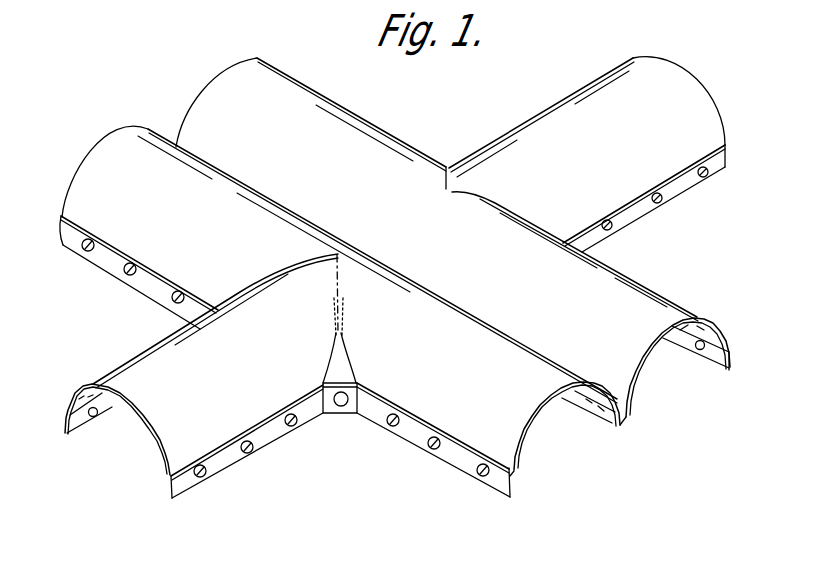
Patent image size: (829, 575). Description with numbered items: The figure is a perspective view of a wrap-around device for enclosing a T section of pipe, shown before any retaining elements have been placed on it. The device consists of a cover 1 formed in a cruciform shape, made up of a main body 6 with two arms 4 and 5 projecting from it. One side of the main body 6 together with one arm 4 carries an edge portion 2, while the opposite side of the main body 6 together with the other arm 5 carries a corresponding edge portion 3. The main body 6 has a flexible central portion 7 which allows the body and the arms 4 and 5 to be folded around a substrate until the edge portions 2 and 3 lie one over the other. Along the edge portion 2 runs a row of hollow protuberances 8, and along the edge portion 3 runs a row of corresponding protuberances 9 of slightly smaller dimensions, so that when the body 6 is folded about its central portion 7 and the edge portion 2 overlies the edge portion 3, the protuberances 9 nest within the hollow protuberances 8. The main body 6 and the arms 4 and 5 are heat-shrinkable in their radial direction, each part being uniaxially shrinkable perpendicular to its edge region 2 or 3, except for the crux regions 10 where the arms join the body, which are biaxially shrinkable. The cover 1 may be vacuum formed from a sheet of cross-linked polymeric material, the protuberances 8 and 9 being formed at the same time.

The cover 1 is at (289, 71).
The edge portion 2 is at (110, 258).
The edge portion 3 is at (681, 188).
The arm 4 is at (164, 450).
The arm 5 is at (628, 84).
The main body 6 is at (203, 107).
The flexible central portion 7 is at (622, 428).
The hollow protuberances 8 is at (128, 270).
The protuberances 9 is at (704, 178).
The crux regions 10 is at (341, 188).